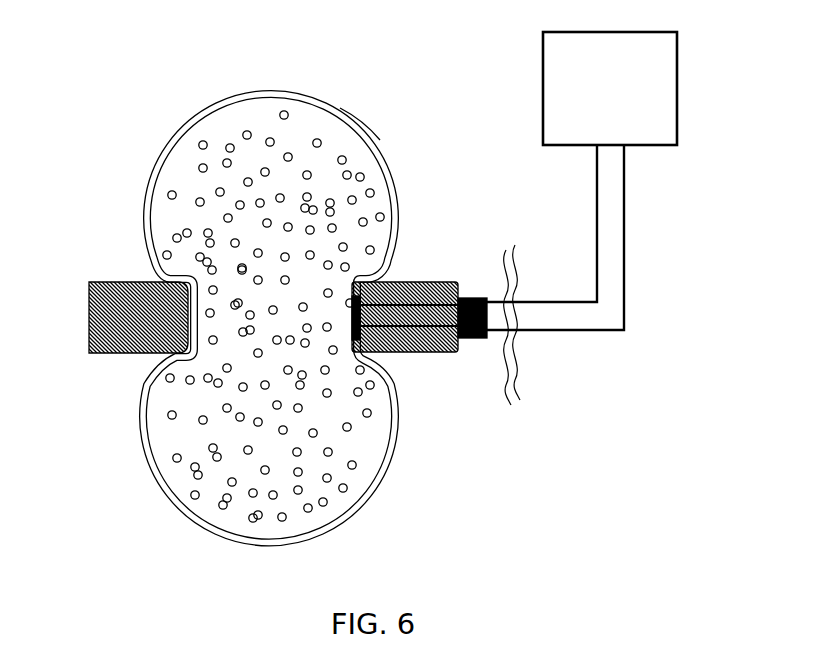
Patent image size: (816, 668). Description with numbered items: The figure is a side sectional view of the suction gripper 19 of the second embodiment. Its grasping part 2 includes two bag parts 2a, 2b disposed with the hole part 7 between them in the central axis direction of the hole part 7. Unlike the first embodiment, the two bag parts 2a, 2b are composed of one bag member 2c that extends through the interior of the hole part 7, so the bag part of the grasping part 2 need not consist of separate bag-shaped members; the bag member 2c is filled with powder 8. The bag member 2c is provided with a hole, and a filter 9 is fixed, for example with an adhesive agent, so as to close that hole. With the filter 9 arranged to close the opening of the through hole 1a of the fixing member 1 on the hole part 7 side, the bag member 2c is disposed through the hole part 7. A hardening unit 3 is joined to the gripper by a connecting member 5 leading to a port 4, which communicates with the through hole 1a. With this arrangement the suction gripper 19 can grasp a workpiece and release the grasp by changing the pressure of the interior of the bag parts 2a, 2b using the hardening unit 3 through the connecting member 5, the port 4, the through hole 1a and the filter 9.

The fixing member 1 is at (440, 352).
The through hole 1a is at (423, 308).
The grasping part 2 is at (110, 407).
The bag part 2a is at (398, 180).
The bag part 2b is at (398, 435).
The bag member 2c is at (360, 122).
The hardening unit 3 is at (677, 117).
The port 4 is at (470, 300).
The connecting member 5 is at (622, 245).
The hole part 7 is at (189, 316).
The powder 8 is at (343, 488).
The filter 9 is at (357, 295).
The suction gripper 19 is at (100, 110).